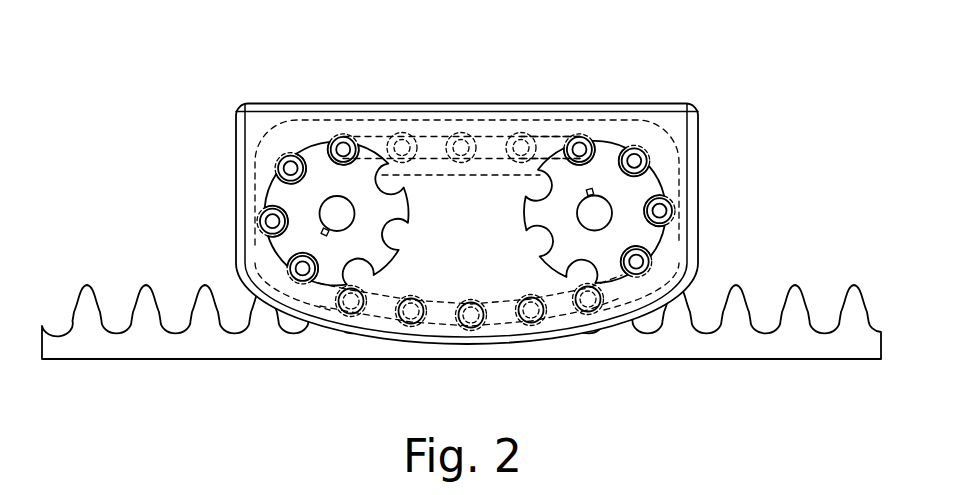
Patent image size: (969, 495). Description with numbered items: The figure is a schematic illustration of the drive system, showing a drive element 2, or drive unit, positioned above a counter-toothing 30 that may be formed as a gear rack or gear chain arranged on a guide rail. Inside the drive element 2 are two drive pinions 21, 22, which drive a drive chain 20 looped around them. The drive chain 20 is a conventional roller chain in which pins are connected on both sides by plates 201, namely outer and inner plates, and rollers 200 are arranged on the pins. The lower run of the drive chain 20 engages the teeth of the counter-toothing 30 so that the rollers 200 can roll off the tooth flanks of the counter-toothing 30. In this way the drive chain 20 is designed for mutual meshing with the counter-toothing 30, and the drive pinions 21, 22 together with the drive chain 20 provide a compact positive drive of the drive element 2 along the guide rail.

The drive element 2 is at (445, 97).
The drive chain 20 is at (435, 151).
The roller 200 is at (578, 137).
The plate 201 is at (553, 137).
The drive pinion 21 is at (282, 196).
The drive pinion 22 is at (651, 198).
The counter-toothing 30 is at (750, 286).